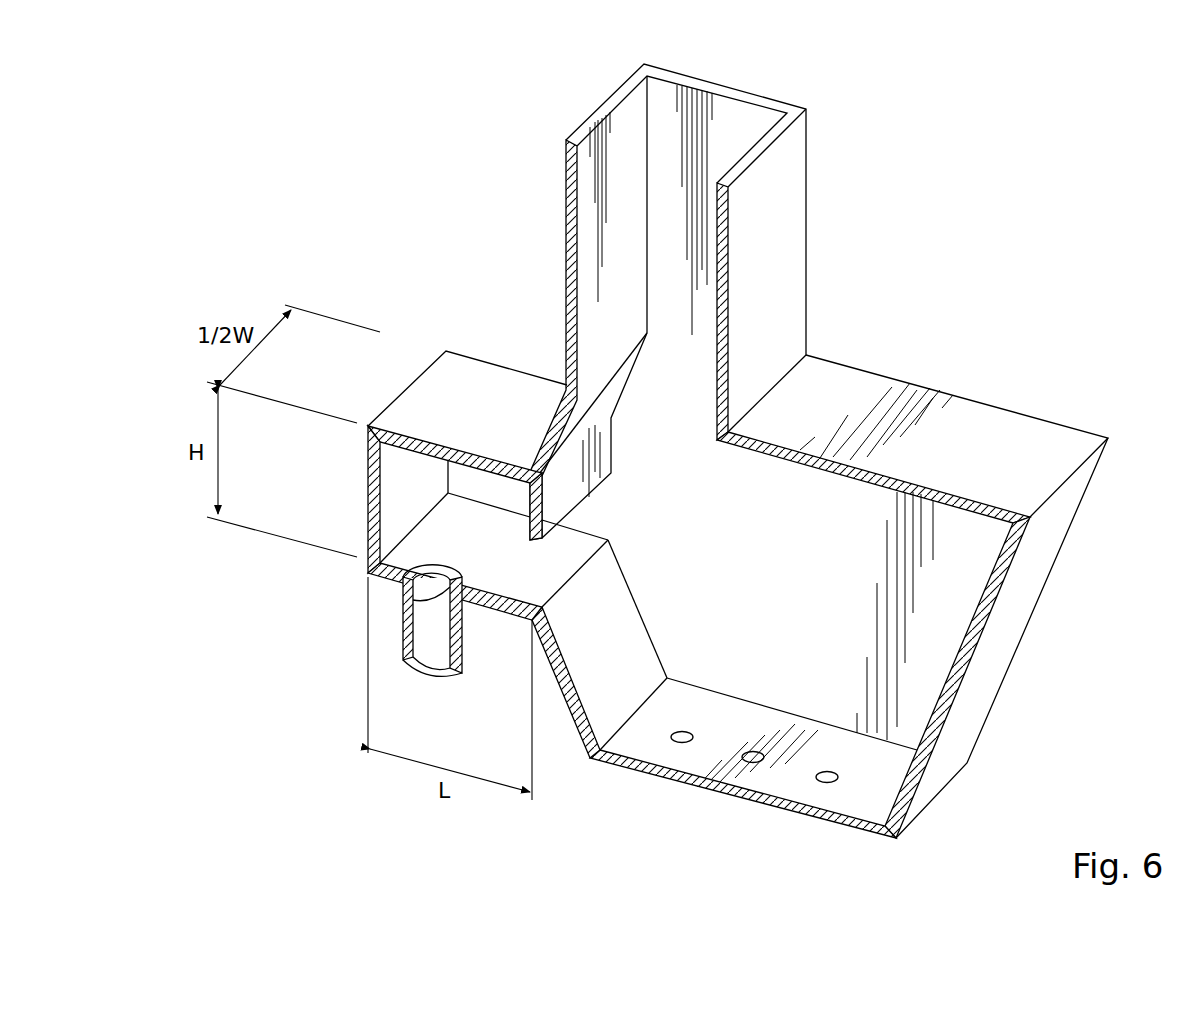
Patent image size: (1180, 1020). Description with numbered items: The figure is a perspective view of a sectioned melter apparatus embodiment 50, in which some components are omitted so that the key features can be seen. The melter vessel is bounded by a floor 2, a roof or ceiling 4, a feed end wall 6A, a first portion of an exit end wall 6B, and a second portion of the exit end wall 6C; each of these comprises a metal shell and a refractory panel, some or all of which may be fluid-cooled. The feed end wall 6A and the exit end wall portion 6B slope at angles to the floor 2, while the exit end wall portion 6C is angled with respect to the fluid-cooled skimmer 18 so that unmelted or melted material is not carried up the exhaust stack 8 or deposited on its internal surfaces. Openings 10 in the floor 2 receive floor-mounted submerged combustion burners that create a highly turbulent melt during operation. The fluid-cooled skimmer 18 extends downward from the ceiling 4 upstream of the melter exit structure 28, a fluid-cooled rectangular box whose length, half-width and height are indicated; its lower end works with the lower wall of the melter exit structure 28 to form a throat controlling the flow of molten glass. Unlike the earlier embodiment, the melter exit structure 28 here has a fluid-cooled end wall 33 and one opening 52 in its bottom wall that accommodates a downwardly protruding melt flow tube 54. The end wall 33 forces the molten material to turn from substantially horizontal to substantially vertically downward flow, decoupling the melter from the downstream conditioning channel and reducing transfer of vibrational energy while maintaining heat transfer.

The floor 2 is at (715, 790).
The roof or ceiling 4 is at (987, 420).
The feed end wall 6A is at (1027, 583).
The first portion of exit end wall 6B is at (568, 708).
The second portion of exit end wall 6C is at (555, 427).
The exhaust stack 8 is at (787, 212).
The openings 10 is at (682, 731).
The fluid-cooled skimmer 18 is at (553, 502).
The melter exit structure 28 is at (348, 590).
The fluid-cooled end wall 33 is at (367, 512).
The melter apparatus embodiment 50 is at (1027, 224).
The opening 52 is at (442, 590).
The melt flow tube 54 is at (418, 660).